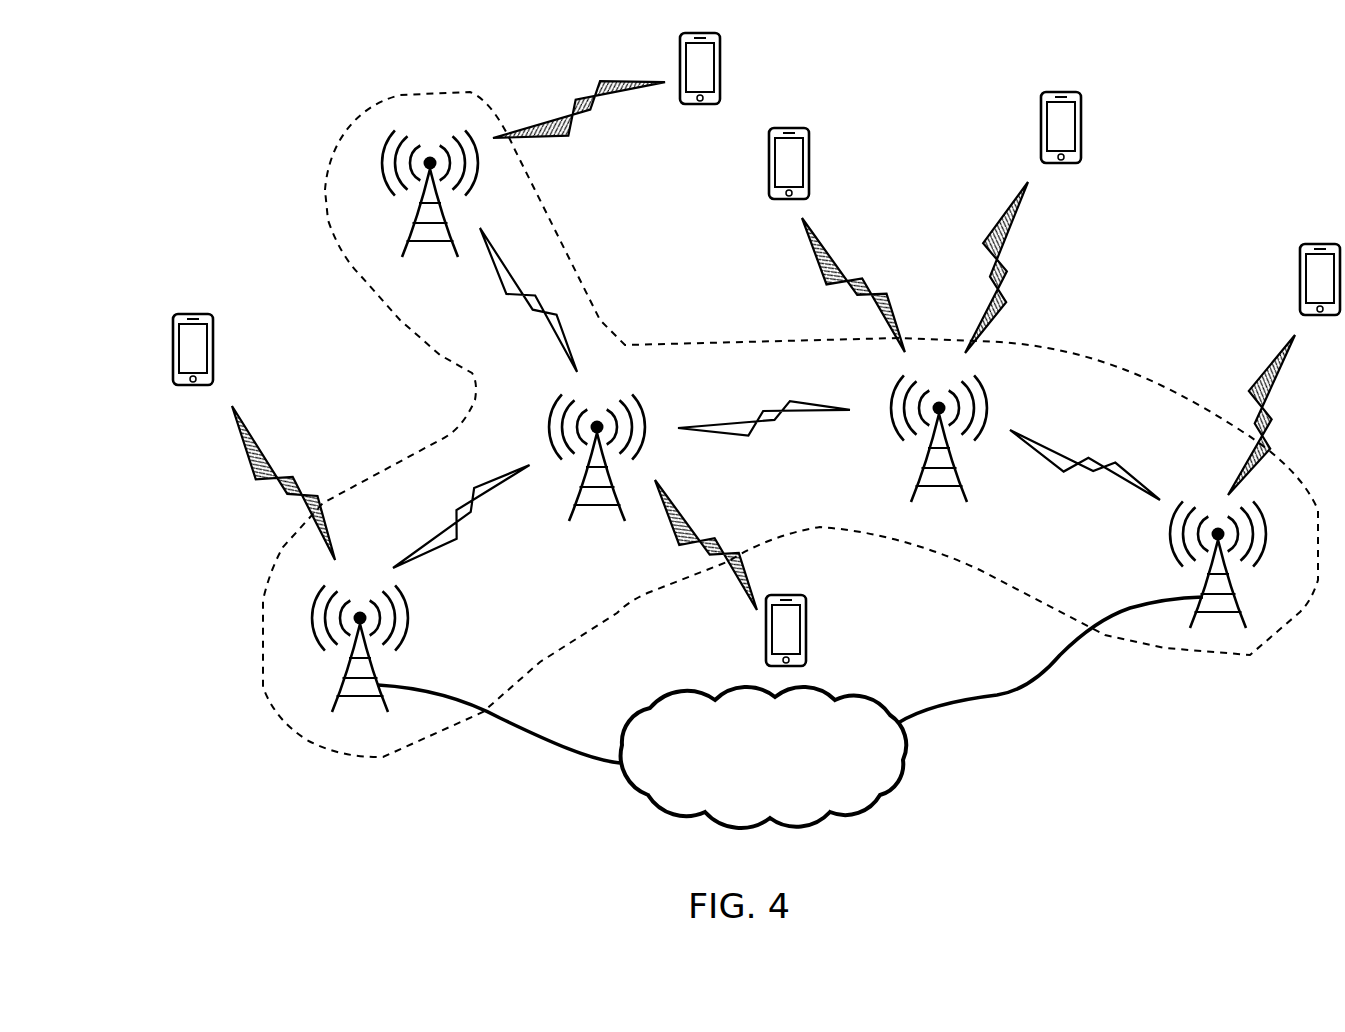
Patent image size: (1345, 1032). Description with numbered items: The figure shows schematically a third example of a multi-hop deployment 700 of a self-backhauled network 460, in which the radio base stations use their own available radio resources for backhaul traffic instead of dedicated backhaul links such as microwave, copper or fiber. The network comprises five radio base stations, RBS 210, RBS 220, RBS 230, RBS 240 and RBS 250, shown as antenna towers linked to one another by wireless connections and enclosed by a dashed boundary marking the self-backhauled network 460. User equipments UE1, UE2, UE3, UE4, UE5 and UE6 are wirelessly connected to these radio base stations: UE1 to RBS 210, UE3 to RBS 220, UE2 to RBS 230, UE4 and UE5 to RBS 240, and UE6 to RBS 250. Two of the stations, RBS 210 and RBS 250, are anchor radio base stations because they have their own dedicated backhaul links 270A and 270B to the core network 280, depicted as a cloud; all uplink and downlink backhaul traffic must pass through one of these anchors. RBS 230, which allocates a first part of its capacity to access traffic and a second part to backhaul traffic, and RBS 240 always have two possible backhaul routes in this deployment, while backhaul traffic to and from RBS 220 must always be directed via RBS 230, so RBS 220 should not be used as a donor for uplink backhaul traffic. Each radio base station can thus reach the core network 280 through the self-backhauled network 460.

The wireless communication system 700 is at (226, 149).
The anchor radio base station 210 is at (342, 736).
The radio base station 220 is at (404, 288).
The radio base station 230 is at (596, 543).
The radio base station 240 is at (991, 486).
The anchor radio base station 250 is at (1223, 640).
The self-backhauled network 460 is at (708, 346).
The dedicated backhaul link 270A is at (548, 749).
The dedicated backhaul link 270B is at (1014, 701).
The core network 280 is at (870, 697).
The user equipment UE1 is at (175, 407).
The user equipment UE2 is at (749, 637).
The user equipment UE3 is at (736, 65).
The user equipment UE4 is at (835, 169).
The user equipment UE5 is at (1116, 153).
The user equipment UE6 is at (1281, 283).